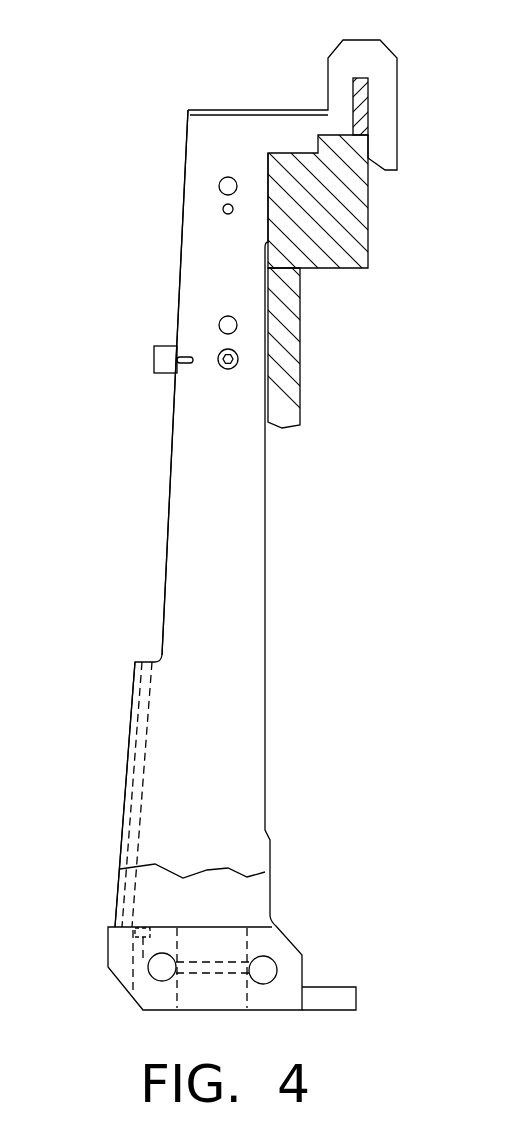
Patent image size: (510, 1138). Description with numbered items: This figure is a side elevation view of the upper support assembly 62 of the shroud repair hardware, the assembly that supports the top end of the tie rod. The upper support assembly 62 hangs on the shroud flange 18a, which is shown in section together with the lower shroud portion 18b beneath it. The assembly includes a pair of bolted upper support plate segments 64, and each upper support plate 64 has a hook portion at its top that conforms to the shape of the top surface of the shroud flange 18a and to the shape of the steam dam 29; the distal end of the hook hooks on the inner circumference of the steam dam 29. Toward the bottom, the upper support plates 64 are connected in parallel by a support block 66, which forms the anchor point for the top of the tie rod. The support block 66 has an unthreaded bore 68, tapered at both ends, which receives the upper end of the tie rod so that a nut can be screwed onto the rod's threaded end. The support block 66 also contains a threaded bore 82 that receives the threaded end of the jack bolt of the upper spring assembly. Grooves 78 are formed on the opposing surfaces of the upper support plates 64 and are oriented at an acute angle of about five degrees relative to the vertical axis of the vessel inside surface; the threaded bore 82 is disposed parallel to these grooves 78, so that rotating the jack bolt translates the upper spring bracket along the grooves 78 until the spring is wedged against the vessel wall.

The upper support plate 64 is at (355, 40).
The steam dam 29 is at (365, 104).
The shroud flange 18a is at (342, 208).
The lower rail member 18b is at (300, 350).
The upper support assembly 62 is at (180, 258).
The grooves 78 is at (133, 755).
The unthreaded bore 68 is at (247, 940).
The threaded bore 82 is at (132, 955).
The support block 66 is at (307, 975).